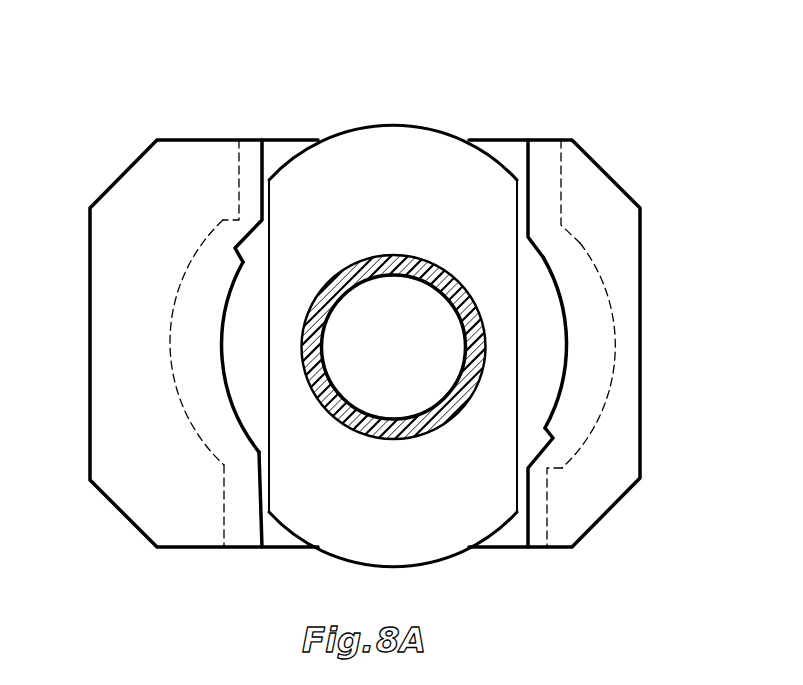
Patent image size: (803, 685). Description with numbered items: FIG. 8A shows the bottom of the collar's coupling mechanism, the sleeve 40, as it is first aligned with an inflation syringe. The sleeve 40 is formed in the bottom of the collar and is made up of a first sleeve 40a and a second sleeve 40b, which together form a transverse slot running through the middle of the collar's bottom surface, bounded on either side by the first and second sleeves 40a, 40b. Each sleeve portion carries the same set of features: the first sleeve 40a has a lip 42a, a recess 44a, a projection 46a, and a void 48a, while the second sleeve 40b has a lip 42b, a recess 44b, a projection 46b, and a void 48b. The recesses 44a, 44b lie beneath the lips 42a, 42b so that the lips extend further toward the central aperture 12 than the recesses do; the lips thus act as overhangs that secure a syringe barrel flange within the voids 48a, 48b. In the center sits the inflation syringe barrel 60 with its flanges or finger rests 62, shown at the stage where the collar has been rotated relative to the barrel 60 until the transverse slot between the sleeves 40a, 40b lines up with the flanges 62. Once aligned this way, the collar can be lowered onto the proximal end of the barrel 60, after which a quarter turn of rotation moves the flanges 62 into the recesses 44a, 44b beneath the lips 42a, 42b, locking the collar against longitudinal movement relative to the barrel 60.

The sleeve 40 is at (232, 120).
The first sleeve 40a is at (188, 341).
The second sleeve 40b is at (600, 313).
The lip 42a is at (228, 288).
The lip 42b is at (543, 257).
The recess 44a is at (194, 414).
The recess 44b is at (586, 376).
The projection 46a is at (240, 220).
The projection 46b is at (548, 470).
The void 48a is at (237, 538).
The void 48b is at (547, 175).
The flange 62 is at (360, 124).
The inflation syringe barrel 60 is at (482, 374).
The aperture 12 is at (387, 312).